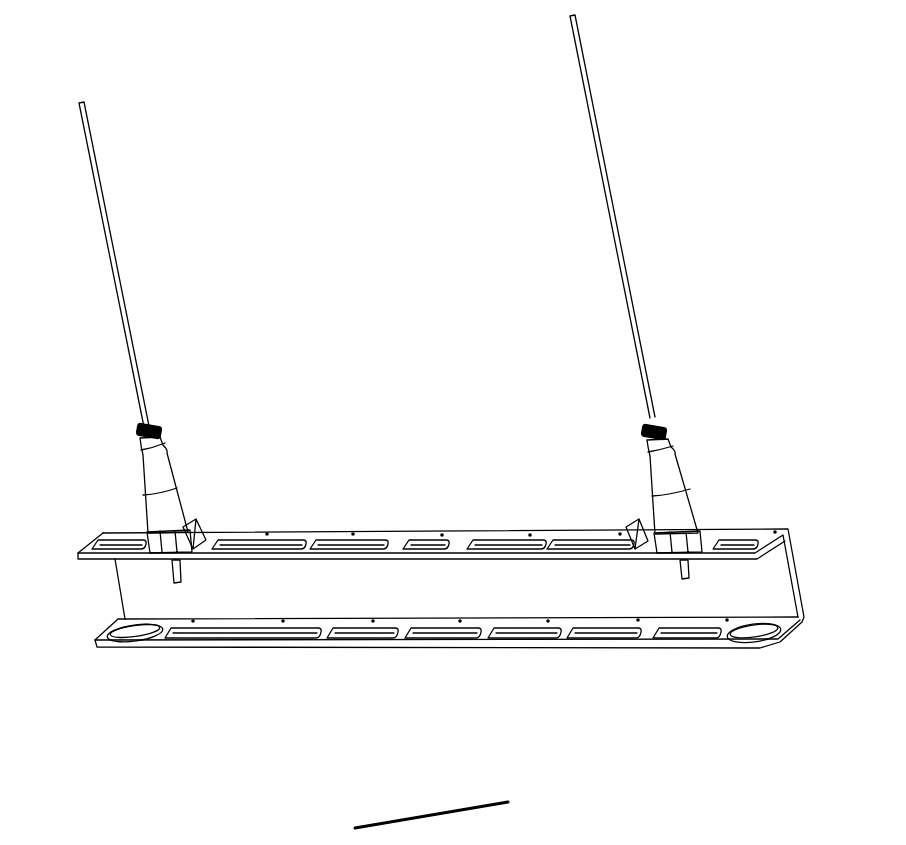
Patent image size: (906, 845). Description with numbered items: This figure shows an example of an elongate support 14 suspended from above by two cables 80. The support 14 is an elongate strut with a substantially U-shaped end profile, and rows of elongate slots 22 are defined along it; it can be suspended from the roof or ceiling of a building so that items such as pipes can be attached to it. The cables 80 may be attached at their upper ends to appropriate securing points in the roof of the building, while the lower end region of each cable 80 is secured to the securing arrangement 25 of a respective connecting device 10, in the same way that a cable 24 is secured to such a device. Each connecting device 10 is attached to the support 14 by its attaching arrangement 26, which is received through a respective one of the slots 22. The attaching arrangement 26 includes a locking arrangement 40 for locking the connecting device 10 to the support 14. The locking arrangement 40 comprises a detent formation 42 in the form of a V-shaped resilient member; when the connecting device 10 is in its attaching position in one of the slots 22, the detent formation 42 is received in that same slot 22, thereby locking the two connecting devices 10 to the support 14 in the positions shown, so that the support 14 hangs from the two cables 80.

The connecting device 10 is at (699, 461).
The support 14 is at (408, 515).
The slots 22 is at (280, 532).
The cable 24 is at (128, 308).
The securing arrangement 25 is at (178, 462).
The attaching arrangement 26 is at (142, 544).
The locking arrangement 40 is at (209, 520).
The detent formation 42 is at (158, 547).
The cables 80 is at (115, 265).